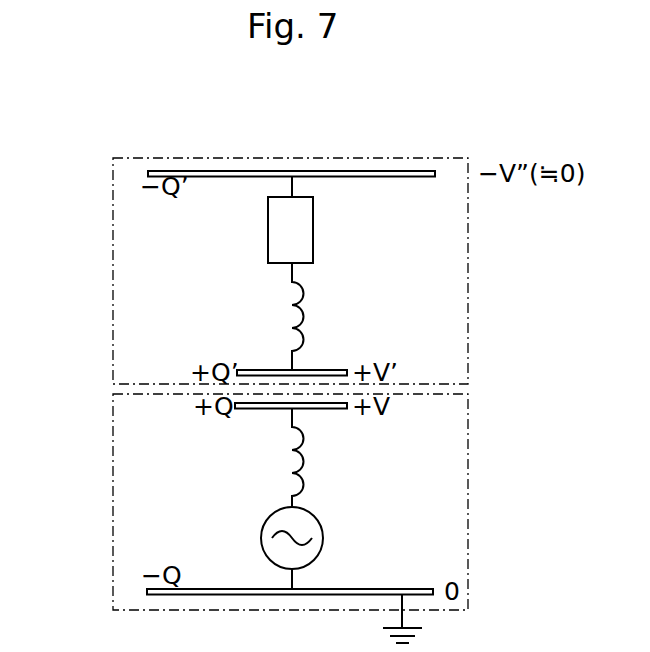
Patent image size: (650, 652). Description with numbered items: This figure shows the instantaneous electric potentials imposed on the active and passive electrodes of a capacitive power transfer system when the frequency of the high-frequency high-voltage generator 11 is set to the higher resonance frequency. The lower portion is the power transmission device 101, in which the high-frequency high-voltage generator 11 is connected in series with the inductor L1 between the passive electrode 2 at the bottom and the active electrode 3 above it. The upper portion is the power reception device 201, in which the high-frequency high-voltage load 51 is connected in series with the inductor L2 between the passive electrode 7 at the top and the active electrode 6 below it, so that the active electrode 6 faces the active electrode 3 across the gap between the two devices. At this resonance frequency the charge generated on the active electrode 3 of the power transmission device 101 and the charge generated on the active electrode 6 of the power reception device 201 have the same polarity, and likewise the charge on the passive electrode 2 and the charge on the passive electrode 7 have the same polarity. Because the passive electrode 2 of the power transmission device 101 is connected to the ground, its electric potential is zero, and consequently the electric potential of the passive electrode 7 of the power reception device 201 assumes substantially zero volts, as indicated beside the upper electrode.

The power reception device 201 is at (111, 272).
The power transmission device 101 is at (111, 500).
The passive electrode 7 is at (395, 178).
The high-frequency high-voltage load 51 is at (313, 229).
The inductor L2 is at (305, 310).
The active electrode 6 is at (333, 369).
The active electrode 3 is at (333, 409).
The inductor L1 is at (305, 466).
The high-frequency high-voltage generator 11 is at (323, 538).
The passive electrode 2 is at (393, 588).